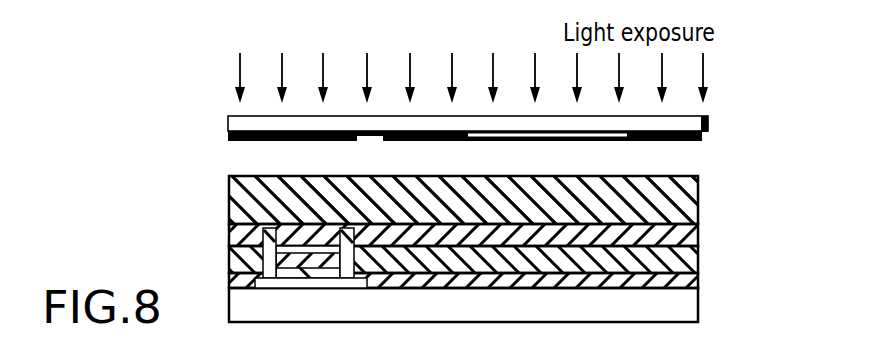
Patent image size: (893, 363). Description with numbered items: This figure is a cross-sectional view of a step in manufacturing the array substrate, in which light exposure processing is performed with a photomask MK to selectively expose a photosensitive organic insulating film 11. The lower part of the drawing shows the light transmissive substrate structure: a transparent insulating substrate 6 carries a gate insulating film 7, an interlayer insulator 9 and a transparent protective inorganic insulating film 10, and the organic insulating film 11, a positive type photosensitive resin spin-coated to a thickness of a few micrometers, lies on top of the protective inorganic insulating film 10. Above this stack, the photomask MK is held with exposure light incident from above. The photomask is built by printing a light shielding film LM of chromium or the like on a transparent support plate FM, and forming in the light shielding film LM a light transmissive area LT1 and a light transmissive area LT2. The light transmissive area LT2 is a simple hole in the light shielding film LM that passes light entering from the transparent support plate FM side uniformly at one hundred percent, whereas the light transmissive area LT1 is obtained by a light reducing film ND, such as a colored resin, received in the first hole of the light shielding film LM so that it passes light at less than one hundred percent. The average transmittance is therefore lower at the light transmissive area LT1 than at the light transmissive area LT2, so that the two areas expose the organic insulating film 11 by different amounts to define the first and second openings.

The transparent support plate FM is at (236, 125).
The light shielding film LM is at (436, 152).
The light transmissive area LT1 is at (547, 150).
The light transmissive area LT2 is at (372, 152).
The light reducing film ND is at (615, 137).
The photomask MK is at (487, 140).
The organic insulating film 11 is at (690, 199).
The protective inorganic insulating film 10 is at (692, 237).
The interlayer insulator 9 is at (690, 259).
The gate insulating film 7 is at (690, 286).
The transparent insulating substrate 6 is at (690, 313).